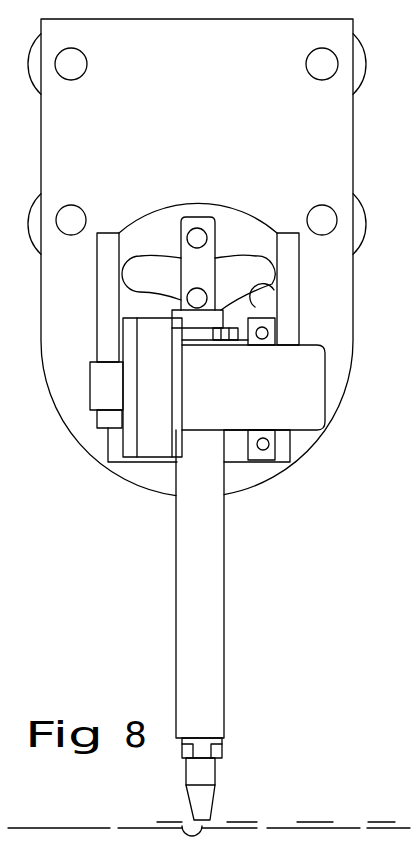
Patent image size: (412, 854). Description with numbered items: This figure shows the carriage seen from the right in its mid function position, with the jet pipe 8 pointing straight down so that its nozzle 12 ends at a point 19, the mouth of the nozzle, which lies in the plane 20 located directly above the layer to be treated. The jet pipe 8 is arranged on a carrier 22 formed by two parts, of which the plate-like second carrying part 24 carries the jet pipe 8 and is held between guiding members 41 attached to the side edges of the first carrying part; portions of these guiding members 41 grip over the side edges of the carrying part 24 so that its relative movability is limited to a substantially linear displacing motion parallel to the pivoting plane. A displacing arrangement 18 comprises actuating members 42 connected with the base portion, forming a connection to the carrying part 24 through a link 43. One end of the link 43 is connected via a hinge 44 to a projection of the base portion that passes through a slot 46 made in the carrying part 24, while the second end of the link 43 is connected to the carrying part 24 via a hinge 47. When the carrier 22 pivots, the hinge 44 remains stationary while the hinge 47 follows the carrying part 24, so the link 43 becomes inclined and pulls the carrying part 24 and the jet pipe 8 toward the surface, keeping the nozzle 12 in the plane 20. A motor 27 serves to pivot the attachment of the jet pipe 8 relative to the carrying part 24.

The jet pipe 8 is at (213, 565).
The nozzle 12 is at (217, 778).
The displacing arrangement 18 is at (240, 211).
The point (mouth of the nozzle) 19 is at (185, 827).
The plane 20 is at (397, 822).
The carrier 22 is at (300, 271).
The second carrying part 24 is at (158, 230).
The motor 27 is at (302, 412).
The guiding members 41 is at (102, 282).
The actuating members 42 is at (174, 263).
The link 43 is at (205, 263).
The hinge 44 is at (200, 303).
The slot 46 is at (278, 287).
The hinge 47 is at (197, 232).